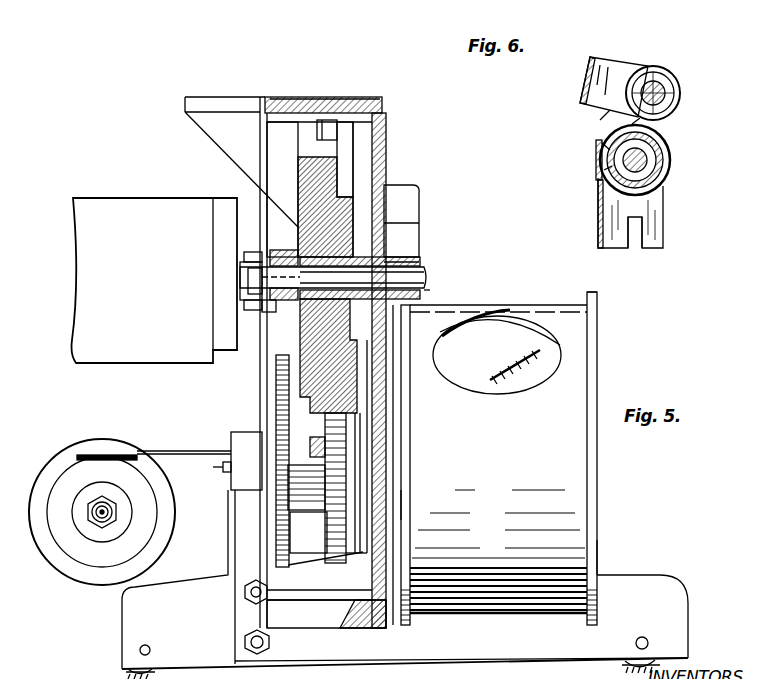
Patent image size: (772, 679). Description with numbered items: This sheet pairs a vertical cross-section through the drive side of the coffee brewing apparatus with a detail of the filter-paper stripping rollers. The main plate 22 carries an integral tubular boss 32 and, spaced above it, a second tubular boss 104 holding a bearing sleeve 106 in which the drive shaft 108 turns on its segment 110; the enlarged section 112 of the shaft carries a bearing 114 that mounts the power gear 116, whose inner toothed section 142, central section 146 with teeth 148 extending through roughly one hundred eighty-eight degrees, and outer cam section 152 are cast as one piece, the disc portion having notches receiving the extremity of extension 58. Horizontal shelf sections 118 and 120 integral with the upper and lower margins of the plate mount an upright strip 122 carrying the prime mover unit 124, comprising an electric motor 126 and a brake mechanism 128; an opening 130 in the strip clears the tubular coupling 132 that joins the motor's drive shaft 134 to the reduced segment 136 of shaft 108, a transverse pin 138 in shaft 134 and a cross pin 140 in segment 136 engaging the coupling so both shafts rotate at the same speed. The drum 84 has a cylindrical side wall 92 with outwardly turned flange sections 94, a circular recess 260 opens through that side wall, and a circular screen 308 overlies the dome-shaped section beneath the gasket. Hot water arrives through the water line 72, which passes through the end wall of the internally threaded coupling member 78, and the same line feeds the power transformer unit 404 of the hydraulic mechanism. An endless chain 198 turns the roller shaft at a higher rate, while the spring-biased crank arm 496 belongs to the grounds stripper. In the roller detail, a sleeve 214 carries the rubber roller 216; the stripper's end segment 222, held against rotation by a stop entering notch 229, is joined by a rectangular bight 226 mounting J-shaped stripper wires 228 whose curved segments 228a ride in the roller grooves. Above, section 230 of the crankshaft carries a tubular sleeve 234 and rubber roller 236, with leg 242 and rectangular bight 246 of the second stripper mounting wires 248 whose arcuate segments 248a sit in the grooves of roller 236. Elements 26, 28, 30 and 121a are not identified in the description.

In FIG. 5, the main plate 22 is at (381, 146).
In FIG. 5, the base 26 is at (538, 660).
In FIG. 5, the foot 28 is at (122, 671).
In FIG. 5, the foot 30 is at (637, 666).
In FIG. 5, the tubular boss 32 is at (392, 443).
In FIG. 5, the extension 58 is at (305, 446).
In FIG. 5, the water line 72 is at (230, 462).
In FIG. 5, the coupling member 78 is at (231, 490).
In FIG. 5, the drum 84 is at (600, 497).
In FIG. 5, the cylindrical side wall 92 is at (478, 620).
In FIG. 5, the flange sections 94 is at (410, 506).
In FIG. 5, the tubular boss 104 is at (400, 257).
In FIG. 5, the bearing sleeve 106 is at (418, 265).
In FIG. 5, the drive shaft 108 is at (432, 288).
In FIG. 5, the segment 110 is at (430, 278).
In FIG. 5, the enlarged section 112 is at (328, 356).
In FIG. 5, the bearing 114 is at (320, 264).
In FIG. 5, the power gear 116 is at (300, 157).
In FIG. 5, the shelf section 118 is at (317, 97).
In FIG. 5, the shelf section 120 is at (372, 628).
In FIG. 5, the upright strip 122 is at (262, 150).
In FIG. 5, the prime mover unit 124 is at (104, 192).
In FIG. 5, the electric motor 126 is at (166, 201).
In FIG. 5, the brake mechanism 128 is at (213, 366).
In FIG. 5, the opening 130 is at (278, 257).
In FIG. 5, the tubular coupling 132 is at (269, 314).
In FIG. 5, the drive shaft 134 is at (248, 281).
In FIG. 5, the reduced segment 136 is at (325, 207).
In FIG. 5, the pin 138 is at (268, 251).
In FIG. 5, the cross pin 140 is at (298, 278).
In FIG. 5, the toothed section 142 is at (355, 202).
In FIG. 5, the central section 146 is at (341, 192).
In FIG. 5, the teeth 148 is at (348, 98).
In FIG. 5, the outer cam section 152 is at (303, 183).
In FIG. 5, the endless chain 198 is at (277, 402).
In FIG. 5, the circular recess 260 is at (531, 322).
In FIG. 5, the circular screen 308 is at (512, 391).
In FIG. 5, the power transformer unit 404 is at (126, 434).
In FIG. 5, the crank arm 496 is at (288, 590).
In FIG. 6, the sleeve 214 is at (662, 176).
In FIG. 6, the rubber roller 216 is at (670, 160).
In FIG. 6, the end segment 222 is at (667, 227).
In FIG. 6, the rectangular bight 226 is at (598, 231).
In FIG. 6, the stripper wires 228 is at (603, 191).
In FIG. 6, the outer curved segments 228a is at (598, 149).
In FIG. 6, the pin 121a is at (605, 170).
In FIG. 6, the notch 229 is at (640, 252).
In FIG. 6, the crankshaft section 230 is at (668, 72).
In FIG. 6, the tubular sleeve 234 is at (668, 97).
In FIG. 6, the rubber roller 236 is at (676, 83).
In FIG. 6, the leg 242 is at (610, 64).
In FIG. 6, the rectangular bight 246 is at (583, 95).
In FIG. 6, the stripper wires 248 is at (600, 113).
In FIG. 6, the outer arcuate segments 248a is at (670, 131).